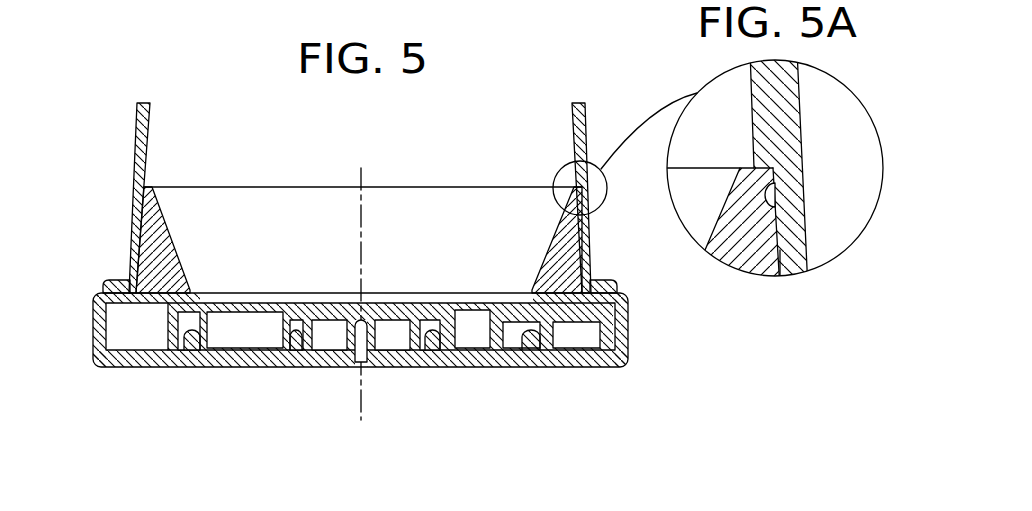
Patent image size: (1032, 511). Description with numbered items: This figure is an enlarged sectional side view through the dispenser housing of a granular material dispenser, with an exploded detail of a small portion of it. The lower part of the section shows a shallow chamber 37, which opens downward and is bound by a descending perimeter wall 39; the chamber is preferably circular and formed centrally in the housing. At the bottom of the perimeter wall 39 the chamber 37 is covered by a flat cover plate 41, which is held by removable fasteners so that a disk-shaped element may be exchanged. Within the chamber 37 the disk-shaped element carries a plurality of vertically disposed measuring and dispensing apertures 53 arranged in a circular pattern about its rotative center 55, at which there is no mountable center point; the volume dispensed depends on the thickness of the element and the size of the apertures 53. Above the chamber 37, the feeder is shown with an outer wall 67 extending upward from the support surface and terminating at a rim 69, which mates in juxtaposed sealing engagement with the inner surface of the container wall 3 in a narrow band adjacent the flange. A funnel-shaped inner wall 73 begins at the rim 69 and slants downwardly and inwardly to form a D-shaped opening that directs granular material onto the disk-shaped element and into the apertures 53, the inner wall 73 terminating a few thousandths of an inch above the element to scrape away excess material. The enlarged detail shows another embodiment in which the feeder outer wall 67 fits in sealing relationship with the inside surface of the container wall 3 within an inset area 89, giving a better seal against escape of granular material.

In FIG. 5A, the container wall 3 is at (788, 143).
In FIG. 5, the shallow chamber 37 is at (605, 325).
In FIG. 5, the perimeter wall 39 is at (100, 325).
In FIG. 5, the cover plate 41 is at (547, 360).
In FIG. 5, the measuring and dispensing apertures 53 is at (245, 337).
In FIG. 5, the rotative center 55 is at (374, 352).
In FIG. 5, the outer wall 67 is at (589, 252).
In FIG. 5A, the outer wall 67 is at (807, 270).
In FIG. 5, the rim 69 is at (146, 187).
In FIG. 5A, the rim 69 is at (753, 165).
In FIG. 5, the inner wall 73 is at (176, 240).
In FIG. 5A, the inner wall 73 is at (722, 214).
In FIG. 5A, the inset area 89 is at (777, 208).